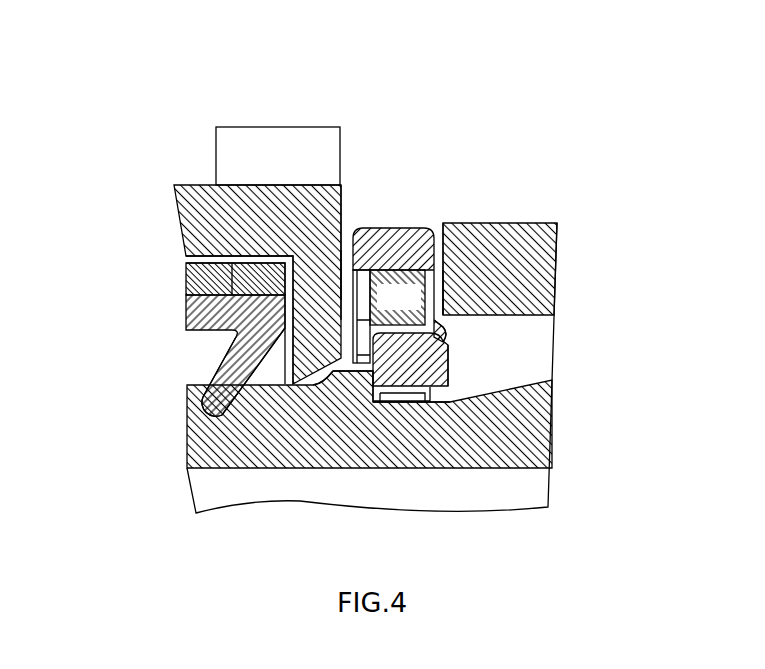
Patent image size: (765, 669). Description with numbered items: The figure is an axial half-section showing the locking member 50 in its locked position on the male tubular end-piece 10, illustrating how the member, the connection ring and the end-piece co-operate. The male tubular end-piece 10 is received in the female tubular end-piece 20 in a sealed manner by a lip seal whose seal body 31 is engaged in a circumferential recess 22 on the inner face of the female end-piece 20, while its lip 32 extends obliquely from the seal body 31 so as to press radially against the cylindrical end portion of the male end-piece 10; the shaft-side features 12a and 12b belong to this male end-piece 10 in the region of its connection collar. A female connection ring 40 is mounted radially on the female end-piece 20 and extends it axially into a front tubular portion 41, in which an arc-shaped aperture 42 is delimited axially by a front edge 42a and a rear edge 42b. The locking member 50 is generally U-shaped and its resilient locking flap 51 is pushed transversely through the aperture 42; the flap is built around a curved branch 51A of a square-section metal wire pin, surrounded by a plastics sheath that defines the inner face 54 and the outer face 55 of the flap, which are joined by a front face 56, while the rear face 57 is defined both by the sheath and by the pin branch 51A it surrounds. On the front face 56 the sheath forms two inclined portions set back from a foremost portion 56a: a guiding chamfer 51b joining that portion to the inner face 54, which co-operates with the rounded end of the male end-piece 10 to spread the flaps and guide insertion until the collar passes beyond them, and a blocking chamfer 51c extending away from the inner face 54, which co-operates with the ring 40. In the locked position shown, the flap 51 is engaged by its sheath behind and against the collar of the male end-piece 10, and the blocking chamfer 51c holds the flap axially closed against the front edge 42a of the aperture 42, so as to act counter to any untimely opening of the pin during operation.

The male tubular end-piece 10 is at (200, 453).
The shaft stepped surface 12a is at (370, 371).
The shaft shoulder 12b is at (367, 371).
The female tubular end-piece 20 is at (182, 279).
The circumferential recess 22 is at (222, 257).
The seal body 31 is at (210, 312).
The lip 32 is at (205, 404).
The female connection ring 40 is at (200, 160).
The front tubular portion 41 is at (507, 214).
The aperture 42 is at (450, 286).
The front edge 42a is at (450, 283).
The rear edge 42b is at (346, 235).
The locking member 50 is at (431, 281).
The locking flap 51 is at (366, 370).
The curved branch 51A is at (397, 297).
The guiding chamfer 51b is at (440, 400).
The blocking chamfer 51c is at (450, 342).
The inner face 54 is at (405, 400).
The outer face 55 is at (397, 228).
The front face 56 is at (442, 327).
The foremost portion 56a is at (445, 357).
The rear face 57 is at (344, 283).